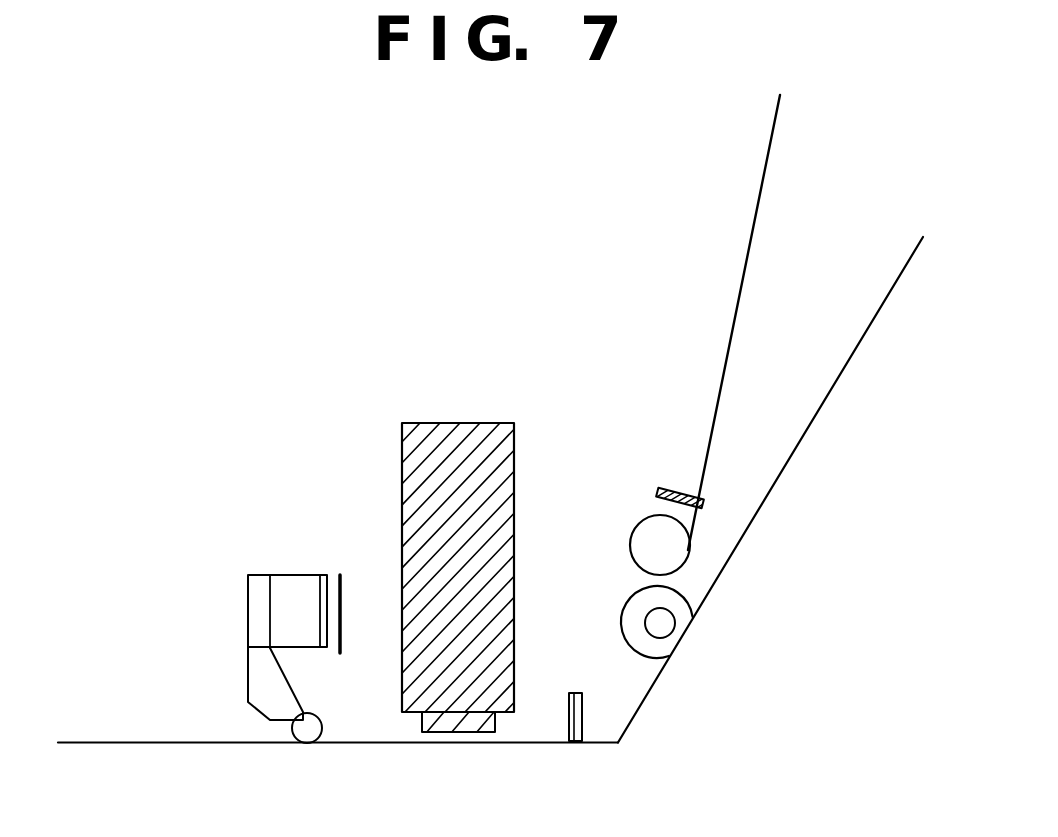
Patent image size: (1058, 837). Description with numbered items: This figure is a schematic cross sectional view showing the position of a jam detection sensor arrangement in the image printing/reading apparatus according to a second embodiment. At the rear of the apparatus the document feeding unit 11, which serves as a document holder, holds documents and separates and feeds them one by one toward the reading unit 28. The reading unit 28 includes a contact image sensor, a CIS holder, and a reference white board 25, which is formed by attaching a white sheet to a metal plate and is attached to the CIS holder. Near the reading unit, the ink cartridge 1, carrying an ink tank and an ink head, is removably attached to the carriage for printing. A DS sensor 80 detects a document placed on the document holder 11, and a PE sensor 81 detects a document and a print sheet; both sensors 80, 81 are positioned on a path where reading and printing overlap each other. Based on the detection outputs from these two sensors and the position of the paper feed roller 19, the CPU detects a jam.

The ink cartridge 1 is at (483, 422).
The document feeding unit 11 is at (767, 168).
The paper feed roller 19 is at (684, 597).
The reference white board 25 is at (342, 573).
The reading unit 28 is at (235, 575).
The DS sensor 80 is at (672, 488).
The PE sensor 81 is at (598, 743).